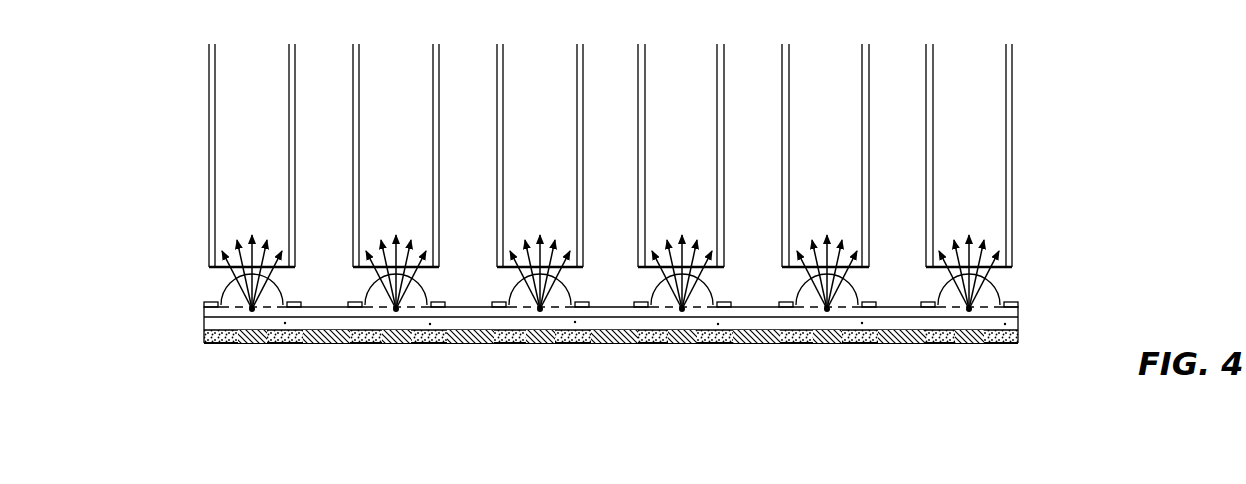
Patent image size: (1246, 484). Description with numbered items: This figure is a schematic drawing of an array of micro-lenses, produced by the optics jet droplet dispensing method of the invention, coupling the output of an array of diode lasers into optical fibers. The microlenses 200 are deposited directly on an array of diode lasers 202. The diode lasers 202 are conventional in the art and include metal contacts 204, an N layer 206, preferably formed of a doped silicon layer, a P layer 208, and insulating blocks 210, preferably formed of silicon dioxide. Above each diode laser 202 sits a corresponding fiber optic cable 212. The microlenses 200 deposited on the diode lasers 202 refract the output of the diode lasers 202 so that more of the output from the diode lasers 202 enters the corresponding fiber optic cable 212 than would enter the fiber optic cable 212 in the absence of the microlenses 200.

The microlens 200 is at (275, 281).
The diode laser 202 is at (204, 323).
The metal contact 204 is at (207, 302).
The N layer 206 is at (1018, 312).
The P layer 208 is at (1020, 325).
The insulating block 210 is at (222, 343).
The fiber optic cable 212 is at (209, 163).